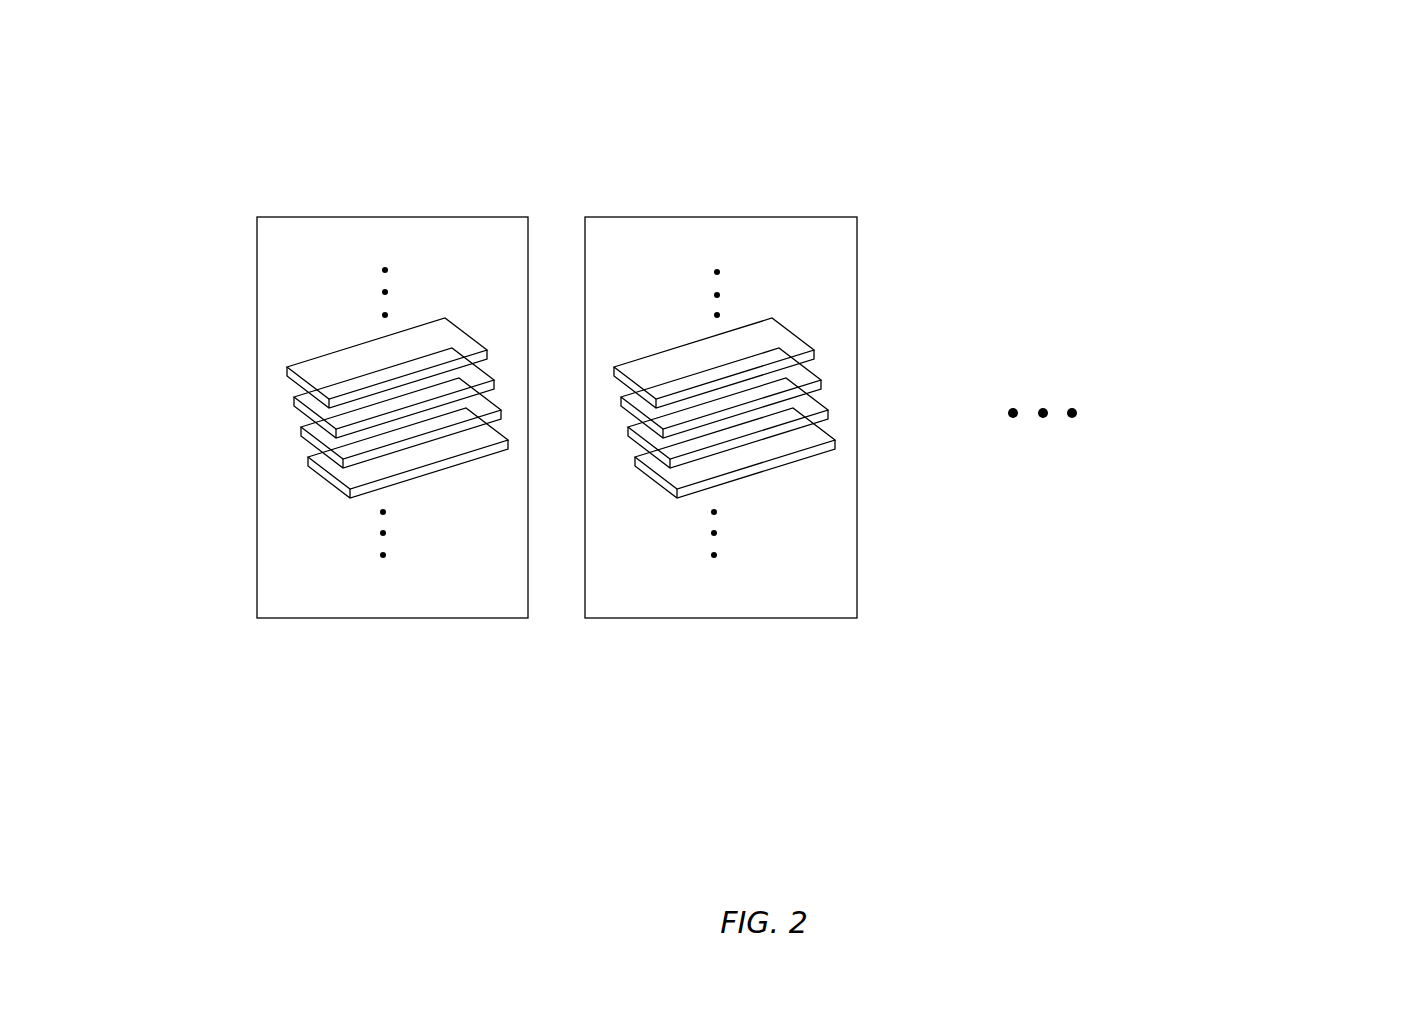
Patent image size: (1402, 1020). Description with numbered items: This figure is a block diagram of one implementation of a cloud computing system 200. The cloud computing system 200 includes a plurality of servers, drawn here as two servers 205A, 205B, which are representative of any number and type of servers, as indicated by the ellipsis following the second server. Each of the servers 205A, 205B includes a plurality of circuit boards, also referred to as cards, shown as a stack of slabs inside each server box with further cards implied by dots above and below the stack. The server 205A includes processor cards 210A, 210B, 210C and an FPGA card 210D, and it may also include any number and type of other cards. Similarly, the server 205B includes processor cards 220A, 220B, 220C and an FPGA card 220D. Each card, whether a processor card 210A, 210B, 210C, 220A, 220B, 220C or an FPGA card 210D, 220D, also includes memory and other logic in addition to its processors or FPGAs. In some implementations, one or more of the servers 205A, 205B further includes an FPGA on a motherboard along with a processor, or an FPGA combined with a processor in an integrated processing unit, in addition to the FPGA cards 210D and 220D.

The cloud computing system 200 is at (1256, 96).
The server 205A is at (387, 217).
The server 205B is at (708, 217).
The processor card 210A is at (452, 333).
The processor card 210B is at (294, 400).
The processor card 210C is at (301, 430).
The FPGA card 210D is at (470, 462).
The processor card 220A is at (783, 331).
The processor card 220B is at (822, 384).
The processor card 220C is at (829, 416).
The FPGA card 220D is at (802, 460).